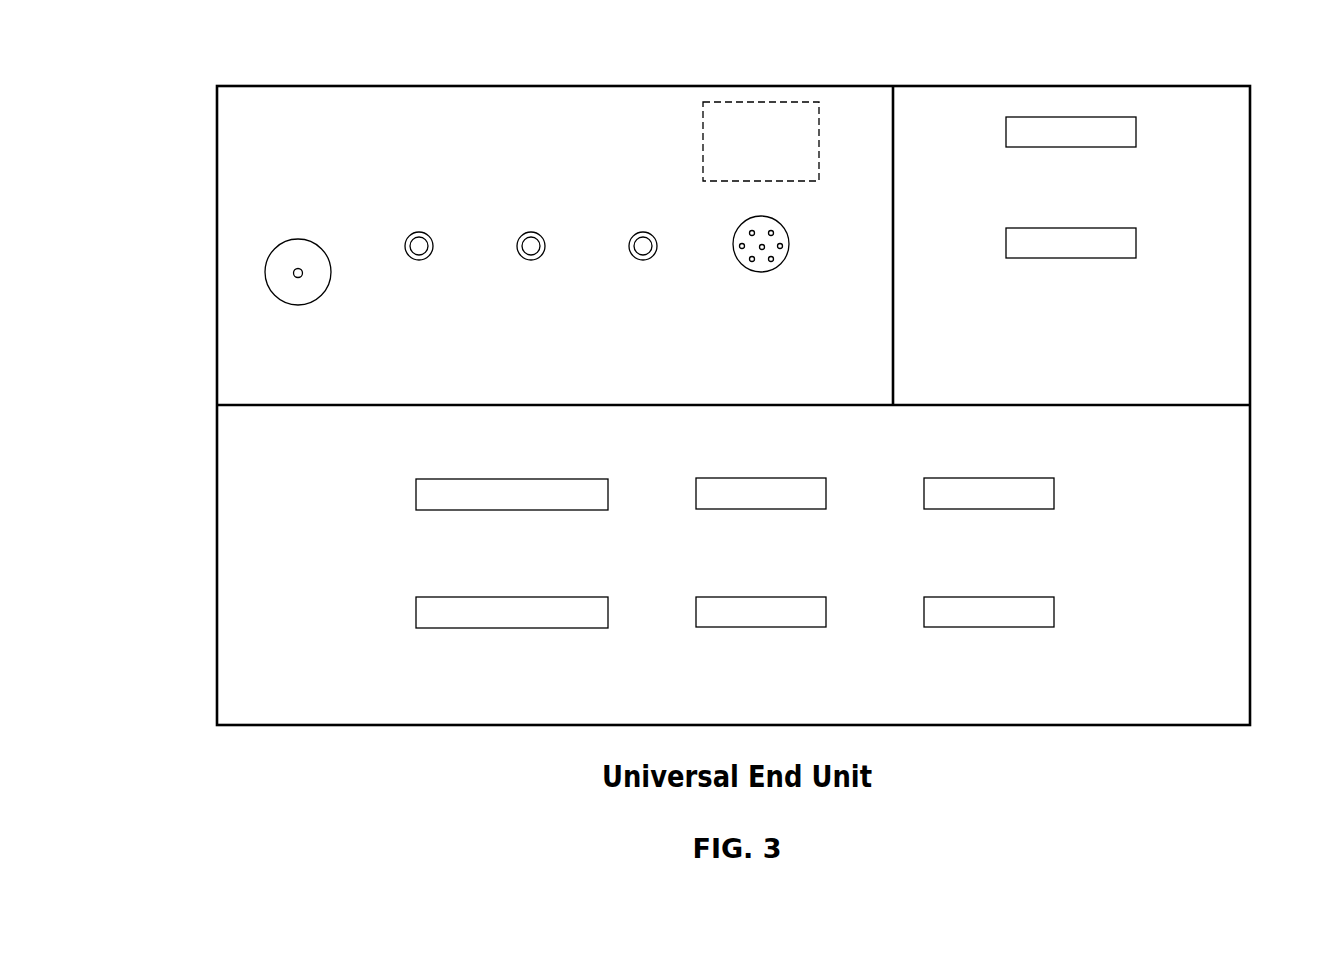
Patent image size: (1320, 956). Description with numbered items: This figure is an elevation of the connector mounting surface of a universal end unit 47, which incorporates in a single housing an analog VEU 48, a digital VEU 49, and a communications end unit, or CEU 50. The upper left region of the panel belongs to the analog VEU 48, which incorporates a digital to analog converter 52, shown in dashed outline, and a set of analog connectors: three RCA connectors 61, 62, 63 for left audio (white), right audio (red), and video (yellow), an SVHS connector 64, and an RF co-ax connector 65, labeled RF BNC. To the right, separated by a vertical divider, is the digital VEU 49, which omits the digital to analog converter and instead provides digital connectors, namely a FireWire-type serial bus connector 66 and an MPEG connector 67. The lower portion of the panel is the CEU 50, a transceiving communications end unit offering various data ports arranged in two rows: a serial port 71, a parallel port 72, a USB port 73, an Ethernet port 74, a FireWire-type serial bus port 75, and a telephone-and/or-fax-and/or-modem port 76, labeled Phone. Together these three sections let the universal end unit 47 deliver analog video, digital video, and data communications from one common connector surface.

The universal end unit 47 is at (1202, 727).
The analog VEU 48 is at (522, 97).
The digital VEU 49 is at (1210, 93).
The CEU 50 is at (1238, 560).
The digital to analog converter 52 is at (767, 117).
The RCA connector 61 is at (419, 232).
The RCA connector 62 is at (531, 232).
The RCA connector 63 is at (643, 232).
The SVHS connector 64 is at (782, 240).
The RF co-ax connector 65 is at (293, 250).
The IEEE 1394 connector 66 is at (1065, 127).
The MPEG connector 67 is at (1122, 250).
The serial port 71 is at (552, 479).
The parallel port 72 is at (552, 597).
The USB port 73 is at (772, 479).
The Ethernet port 74 is at (1000, 479).
The IEEE 1394 port 75 is at (1000, 597).
The telephone/fax/modem port 76 is at (772, 597).